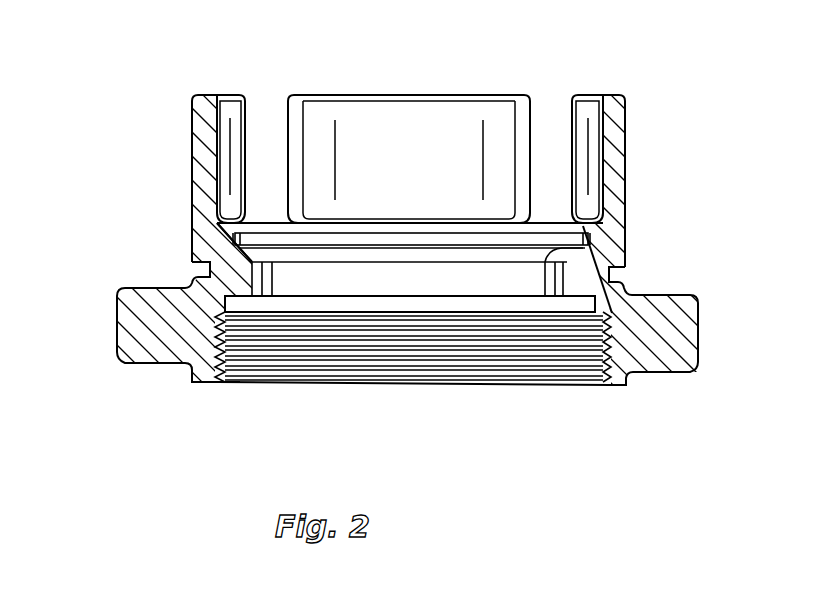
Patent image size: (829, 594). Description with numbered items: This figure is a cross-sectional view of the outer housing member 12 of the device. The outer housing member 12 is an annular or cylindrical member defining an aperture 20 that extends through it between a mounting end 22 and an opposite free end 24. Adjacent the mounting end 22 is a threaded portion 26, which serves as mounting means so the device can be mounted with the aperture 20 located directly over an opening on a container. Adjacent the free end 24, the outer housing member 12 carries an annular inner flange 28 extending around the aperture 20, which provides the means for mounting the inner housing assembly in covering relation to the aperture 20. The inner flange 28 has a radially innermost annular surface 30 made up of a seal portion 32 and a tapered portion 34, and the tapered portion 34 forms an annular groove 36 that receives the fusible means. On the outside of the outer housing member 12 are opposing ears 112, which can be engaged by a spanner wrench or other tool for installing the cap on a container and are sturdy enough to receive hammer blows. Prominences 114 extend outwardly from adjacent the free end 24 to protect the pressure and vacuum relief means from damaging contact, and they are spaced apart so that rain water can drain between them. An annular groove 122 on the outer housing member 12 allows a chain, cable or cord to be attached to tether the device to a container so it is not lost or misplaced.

The outer housing member 12 is at (698, 362).
The aperture 20 is at (585, 245).
The mounting end 22 is at (610, 388).
The free end 24 is at (625, 220).
The threaded portion 26 is at (233, 384).
The inner flange 28 is at (242, 268).
The radially innermost annular surface 30 is at (247, 265).
The seal portion 32 is at (265, 270).
The tapered portion 34 is at (258, 220).
The annular groove 36 is at (235, 244).
The ears 112 is at (124, 362).
The prominences 114 is at (478, 93).
The annular groove 122 is at (620, 277).